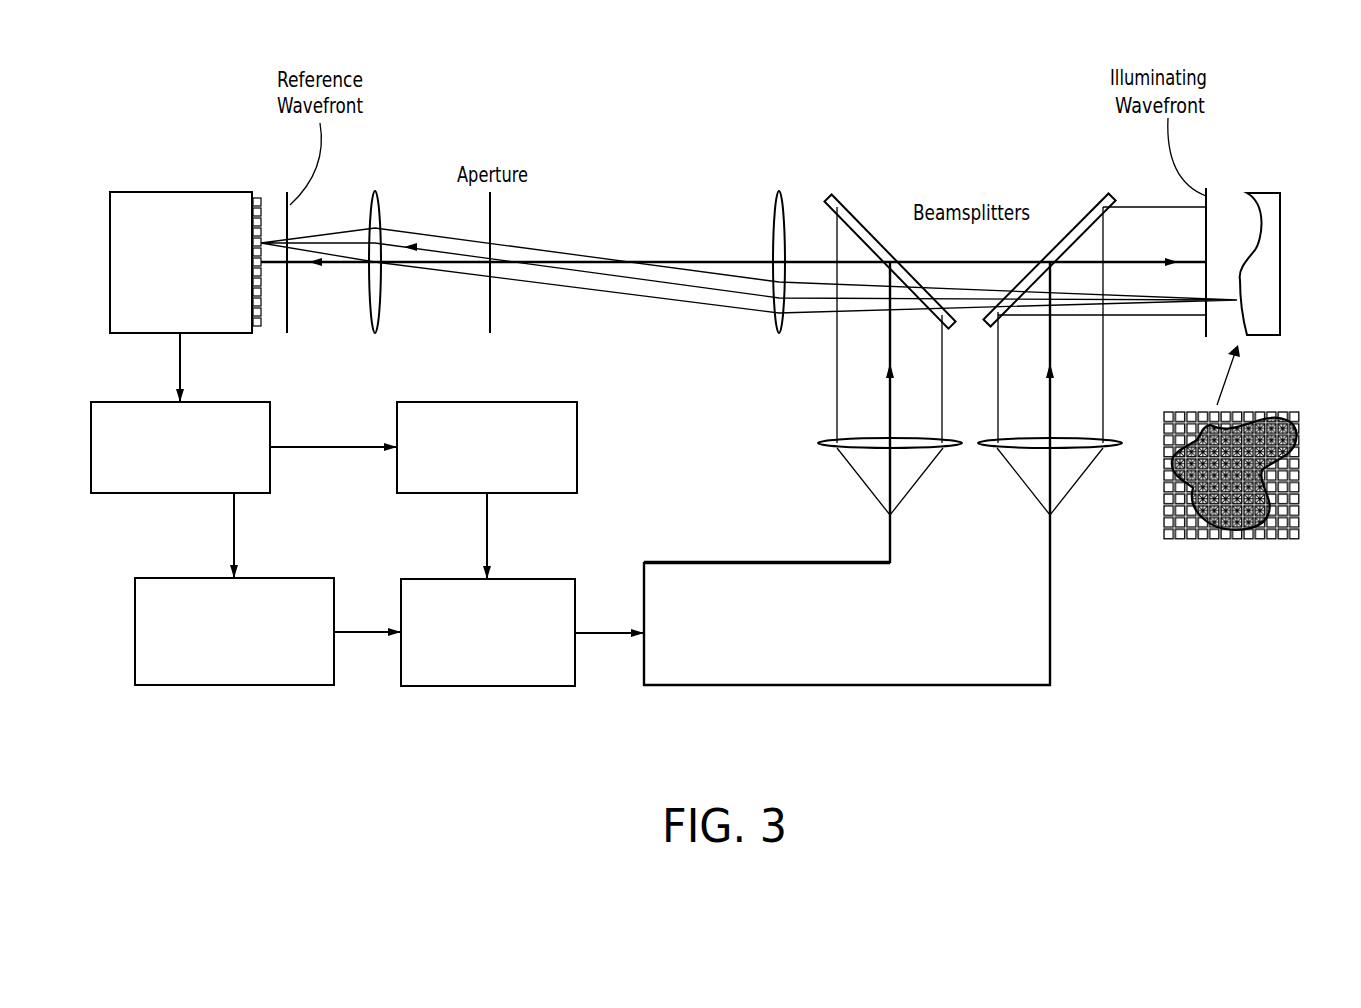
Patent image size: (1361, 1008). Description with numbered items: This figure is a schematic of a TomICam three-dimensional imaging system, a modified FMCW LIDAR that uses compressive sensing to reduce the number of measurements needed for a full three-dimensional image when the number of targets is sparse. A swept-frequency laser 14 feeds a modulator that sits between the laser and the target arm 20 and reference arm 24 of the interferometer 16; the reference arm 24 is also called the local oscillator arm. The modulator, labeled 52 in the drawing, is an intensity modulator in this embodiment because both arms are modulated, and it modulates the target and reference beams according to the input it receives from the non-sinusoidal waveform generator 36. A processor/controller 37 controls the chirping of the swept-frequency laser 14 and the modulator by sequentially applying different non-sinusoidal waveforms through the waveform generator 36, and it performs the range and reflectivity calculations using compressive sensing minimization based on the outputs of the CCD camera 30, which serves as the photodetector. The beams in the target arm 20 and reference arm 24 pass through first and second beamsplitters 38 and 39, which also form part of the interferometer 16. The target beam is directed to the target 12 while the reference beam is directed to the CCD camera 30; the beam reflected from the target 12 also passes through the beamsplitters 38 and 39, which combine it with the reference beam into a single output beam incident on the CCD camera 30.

The target 12 is at (1283, 277).
The swept-frequency laser 14 is at (152, 578).
The interferometer 16 is at (1133, 668).
The target arm 20 is at (877, 687).
The reference arm 24 is at (892, 544).
The CCD camera 30 is at (168, 192).
The non-sinusoidal waveform generator 36 is at (577, 419).
The processor/controller 37 is at (128, 402).
The first beamsplitter 38 is at (850, 213).
The second beamsplitter 39 is at (1072, 228).
The modulator 52 is at (490, 687).